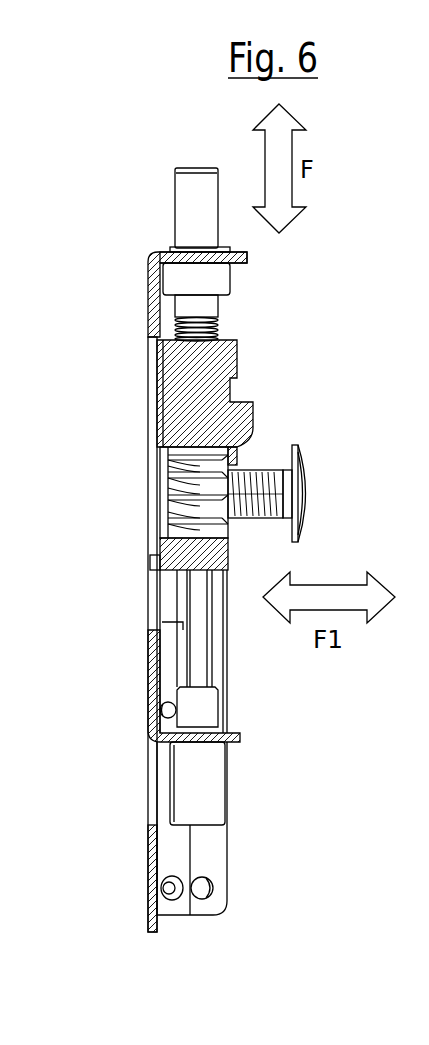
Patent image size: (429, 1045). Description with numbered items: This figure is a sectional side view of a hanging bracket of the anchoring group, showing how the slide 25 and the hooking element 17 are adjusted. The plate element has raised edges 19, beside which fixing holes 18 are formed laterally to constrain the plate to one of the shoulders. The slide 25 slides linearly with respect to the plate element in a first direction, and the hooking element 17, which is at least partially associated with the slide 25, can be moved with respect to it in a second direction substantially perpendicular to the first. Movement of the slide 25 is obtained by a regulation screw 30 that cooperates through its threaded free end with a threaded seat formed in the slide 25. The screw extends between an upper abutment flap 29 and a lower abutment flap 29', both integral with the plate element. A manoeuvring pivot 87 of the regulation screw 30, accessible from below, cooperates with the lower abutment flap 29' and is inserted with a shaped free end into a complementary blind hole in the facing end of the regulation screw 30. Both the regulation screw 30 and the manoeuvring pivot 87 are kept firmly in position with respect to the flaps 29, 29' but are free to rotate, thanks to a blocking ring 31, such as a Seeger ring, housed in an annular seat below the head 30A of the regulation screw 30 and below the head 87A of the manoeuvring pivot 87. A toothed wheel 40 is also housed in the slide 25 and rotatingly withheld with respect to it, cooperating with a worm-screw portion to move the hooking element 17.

The regulation screw 30 is at (205, 165).
The head of the regulation screw 30A is at (180, 205).
The upper abutment flap 29 is at (272, 230).
The blocking ring 31 is at (150, 253).
The hooking element 17 is at (297, 447).
The toothed wheel 40 is at (146, 510).
The slide 25 is at (215, 558).
The manoeuvring pivot 87 is at (197, 603).
The lower abutment flap 29' is at (266, 711).
The raised edges 19 is at (217, 865).
The head of the manoeuvring pivot 87A is at (182, 785).
The fixing holes 18 is at (202, 892).